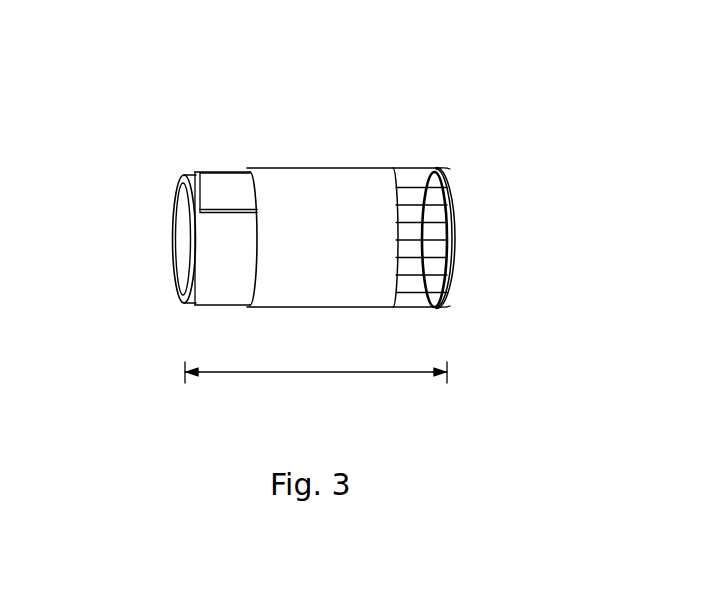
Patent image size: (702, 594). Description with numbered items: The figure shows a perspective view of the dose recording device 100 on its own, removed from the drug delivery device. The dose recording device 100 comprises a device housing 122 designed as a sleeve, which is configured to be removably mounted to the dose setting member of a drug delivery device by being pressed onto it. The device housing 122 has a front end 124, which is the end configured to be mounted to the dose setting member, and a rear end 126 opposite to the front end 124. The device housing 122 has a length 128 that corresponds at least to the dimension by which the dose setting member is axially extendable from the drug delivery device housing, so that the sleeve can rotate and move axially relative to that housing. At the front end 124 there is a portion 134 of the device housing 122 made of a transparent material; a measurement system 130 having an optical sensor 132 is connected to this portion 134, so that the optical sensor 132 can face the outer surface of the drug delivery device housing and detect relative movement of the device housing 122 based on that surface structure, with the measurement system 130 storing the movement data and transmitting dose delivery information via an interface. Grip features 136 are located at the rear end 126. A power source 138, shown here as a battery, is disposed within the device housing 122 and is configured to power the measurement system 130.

The dose recording device 100 is at (465, 133).
The device housing 122 is at (326, 168).
The front end 124 is at (179, 178).
The rear end 126 is at (460, 222).
The length 128 is at (323, 372).
The measurement system 130 is at (222, 183).
The optical sensor 132 is at (222, 183).
The portion 134 is at (217, 283).
The grip features 136 is at (414, 288).
The power source 138 is at (419, 193).